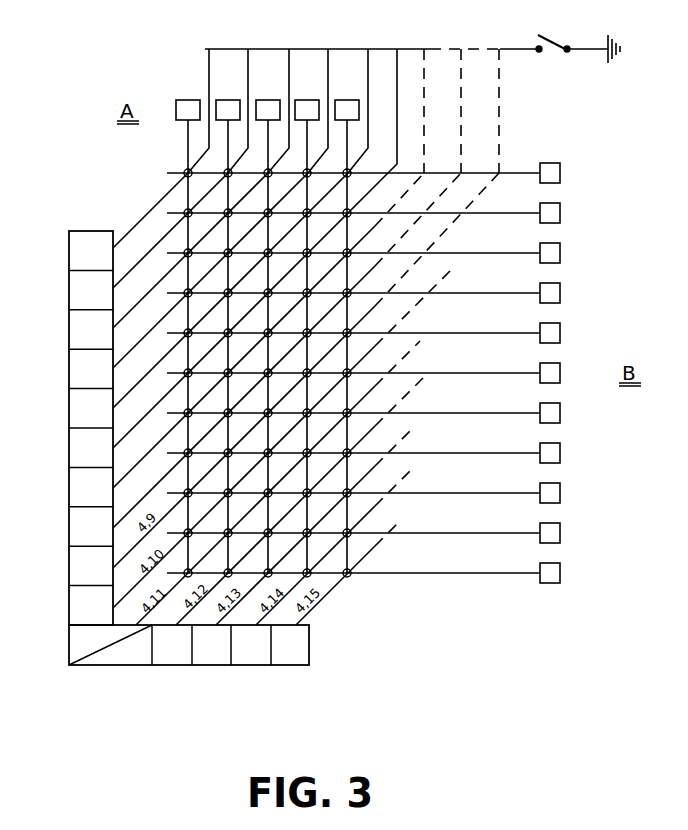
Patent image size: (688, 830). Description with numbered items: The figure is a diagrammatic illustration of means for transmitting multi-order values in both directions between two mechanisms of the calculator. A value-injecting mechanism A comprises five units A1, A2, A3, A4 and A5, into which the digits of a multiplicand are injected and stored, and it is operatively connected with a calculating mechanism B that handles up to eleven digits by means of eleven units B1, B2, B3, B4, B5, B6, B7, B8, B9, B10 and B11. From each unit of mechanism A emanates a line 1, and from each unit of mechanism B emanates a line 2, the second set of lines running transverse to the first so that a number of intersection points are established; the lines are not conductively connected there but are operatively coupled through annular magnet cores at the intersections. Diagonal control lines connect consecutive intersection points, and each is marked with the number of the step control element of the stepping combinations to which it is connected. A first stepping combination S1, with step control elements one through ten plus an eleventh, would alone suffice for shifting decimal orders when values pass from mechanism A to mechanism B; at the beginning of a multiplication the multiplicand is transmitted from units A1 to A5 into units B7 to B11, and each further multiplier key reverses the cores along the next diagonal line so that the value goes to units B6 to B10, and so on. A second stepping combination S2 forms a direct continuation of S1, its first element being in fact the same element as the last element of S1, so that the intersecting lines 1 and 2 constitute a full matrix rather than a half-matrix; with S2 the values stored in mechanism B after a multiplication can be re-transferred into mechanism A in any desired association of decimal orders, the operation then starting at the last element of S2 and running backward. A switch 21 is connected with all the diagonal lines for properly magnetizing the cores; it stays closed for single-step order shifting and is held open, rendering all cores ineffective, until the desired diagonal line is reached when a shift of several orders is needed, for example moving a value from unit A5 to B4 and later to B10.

The line 1 is at (345, 148).
The line 2 is at (528, 172).
The switch 21 is at (556, 42).
The unit of mechanism A A1 is at (350, 100).
The unit of mechanism A A2 is at (310, 100).
The unit of mechanism A A3 is at (271, 100).
The unit of mechanism A A4 is at (231, 100).
The unit of mechanism A A5 is at (191, 100).
The unit of mechanism B B1 is at (561, 181).
The unit of mechanism B B2 is at (561, 221).
The unit of mechanism B B3 is at (561, 261).
The unit of mechanism B B4 is at (561, 301).
The unit of mechanism B B5 is at (561, 341).
The unit of mechanism B B6 is at (561, 381).
The unit of mechanism B B7 is at (561, 421).
The unit of mechanism B B8 is at (561, 461).
The unit of mechanism B B9 is at (561, 501).
The unit of mechanism B B10 is at (561, 541).
The unit of mechanism B B11 is at (561, 581).
The stepping combination S1 is at (67, 248).
The stepping combination S2 is at (309, 668).